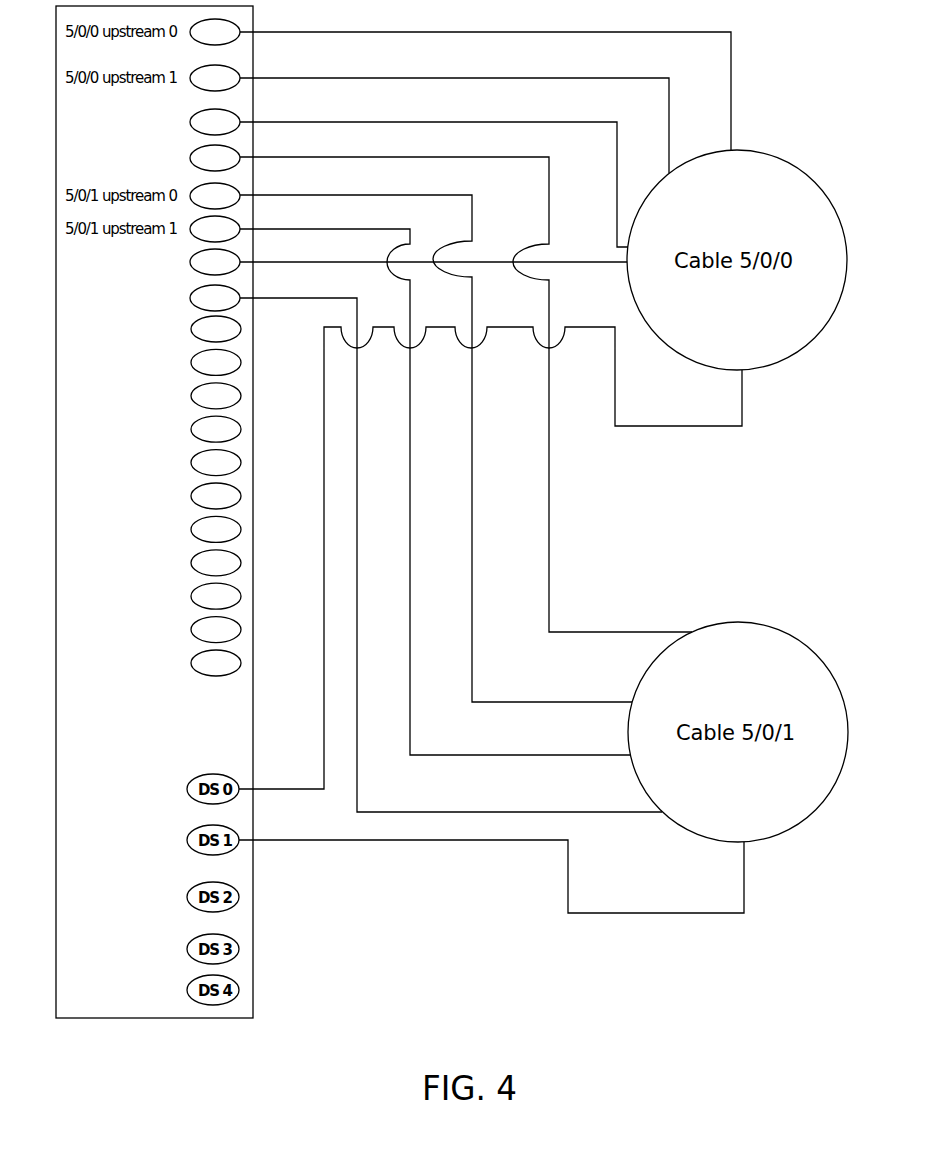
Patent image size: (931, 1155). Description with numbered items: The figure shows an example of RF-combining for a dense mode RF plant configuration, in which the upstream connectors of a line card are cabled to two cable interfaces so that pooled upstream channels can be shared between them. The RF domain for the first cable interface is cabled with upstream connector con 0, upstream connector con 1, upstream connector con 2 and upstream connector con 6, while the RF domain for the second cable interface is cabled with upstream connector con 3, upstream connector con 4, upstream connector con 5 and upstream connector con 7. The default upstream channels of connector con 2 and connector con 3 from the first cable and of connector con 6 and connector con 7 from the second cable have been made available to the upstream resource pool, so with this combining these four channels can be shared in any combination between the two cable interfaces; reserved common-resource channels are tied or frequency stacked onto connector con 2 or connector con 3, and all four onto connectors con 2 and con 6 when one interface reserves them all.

The upstream connector con 0 is at (460, 84).
The upstream connector con 1 is at (429, 119).
The upstream connector con 2 is at (409, 178).
The upstream connector con 3 is at (441, 388).
The upstream connector con 4 is at (411, 442).
The upstream connector con 5 is at (410, 485).
The upstream connector con 6 is at (408, 262).
The upstream connector con 7 is at (426, 548).